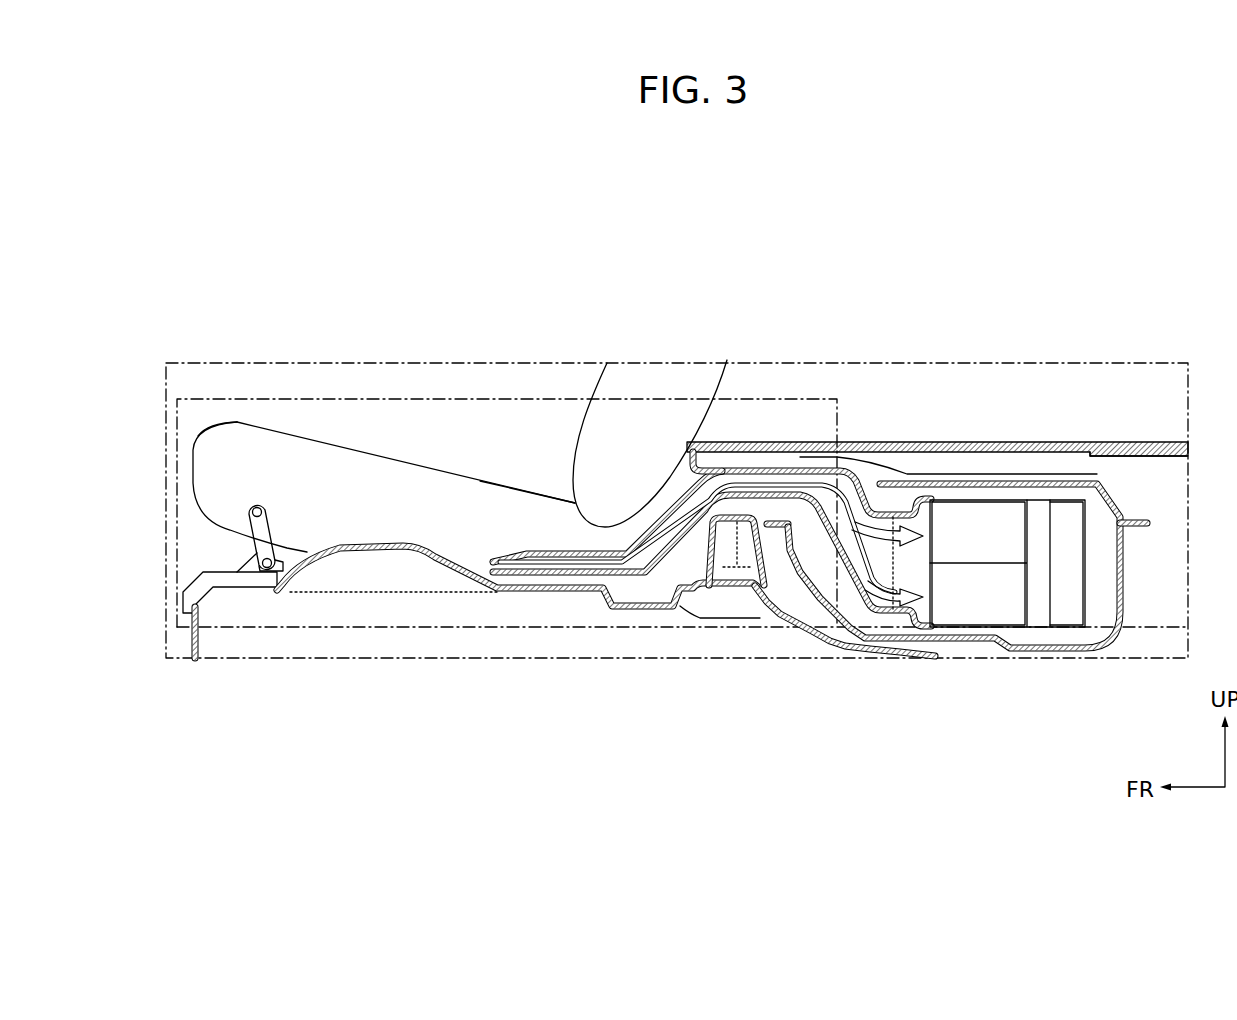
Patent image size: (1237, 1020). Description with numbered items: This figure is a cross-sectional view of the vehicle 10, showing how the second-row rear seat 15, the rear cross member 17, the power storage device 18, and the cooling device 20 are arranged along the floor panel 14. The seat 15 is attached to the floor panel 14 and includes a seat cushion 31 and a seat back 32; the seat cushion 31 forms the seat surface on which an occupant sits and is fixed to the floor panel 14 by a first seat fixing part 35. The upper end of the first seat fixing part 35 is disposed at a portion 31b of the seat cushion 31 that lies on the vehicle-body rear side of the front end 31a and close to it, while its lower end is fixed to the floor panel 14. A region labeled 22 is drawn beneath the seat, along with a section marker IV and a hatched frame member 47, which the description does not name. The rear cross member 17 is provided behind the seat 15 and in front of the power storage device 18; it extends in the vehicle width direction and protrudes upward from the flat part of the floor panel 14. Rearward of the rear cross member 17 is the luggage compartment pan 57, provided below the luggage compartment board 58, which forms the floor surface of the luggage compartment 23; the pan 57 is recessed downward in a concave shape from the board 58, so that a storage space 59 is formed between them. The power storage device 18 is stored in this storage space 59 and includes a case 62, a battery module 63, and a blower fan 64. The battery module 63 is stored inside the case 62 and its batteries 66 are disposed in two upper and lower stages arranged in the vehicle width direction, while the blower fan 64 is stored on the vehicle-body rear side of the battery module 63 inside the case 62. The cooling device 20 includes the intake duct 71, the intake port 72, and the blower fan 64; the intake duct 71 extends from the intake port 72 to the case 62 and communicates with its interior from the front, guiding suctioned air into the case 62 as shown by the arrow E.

The vehicle 10 is at (590, 300).
The floor panel 14 is at (585, 583).
The second-row rear seat 15 is at (532, 484).
The rear cross member 17 is at (730, 460).
The power storage device 18 is at (1067, 470).
The cooling device 20 is at (662, 493).
The seat cushion region 22 is at (491, 441).
The luggage compartment 23 is at (992, 417).
The seat cushion 31 is at (373, 450).
The front end 31a is at (211, 424).
The portion 31b is at (259, 506).
The seat back 32 is at (690, 376).
The first seat fixing part 35 is at (245, 592).
The seat frame 47 is at (400, 543).
The luggage compartment pan 57 is at (837, 648).
The luggage compartment board 58 is at (1133, 445).
The storage space 59 is at (1141, 612).
The case 62 is at (890, 638).
The battery module 63 is at (1010, 512).
The blower fan 64 is at (1072, 515).
The batteries 66 is at (947, 526).
The intake duct 71 is at (737, 512).
The intake port 72 is at (495, 567).
The arrow E is at (903, 522).
The section line IV is at (497, 624).